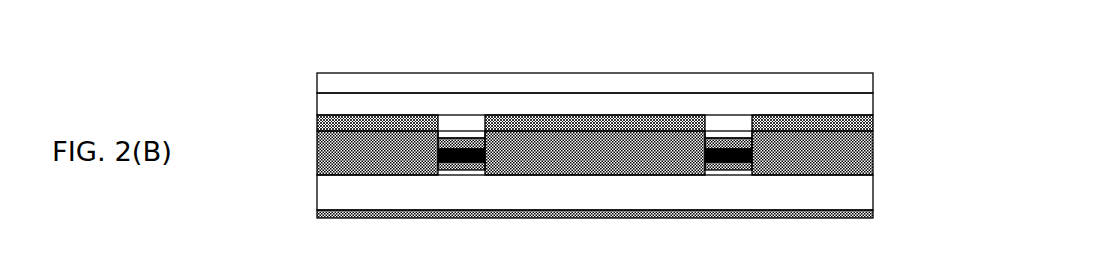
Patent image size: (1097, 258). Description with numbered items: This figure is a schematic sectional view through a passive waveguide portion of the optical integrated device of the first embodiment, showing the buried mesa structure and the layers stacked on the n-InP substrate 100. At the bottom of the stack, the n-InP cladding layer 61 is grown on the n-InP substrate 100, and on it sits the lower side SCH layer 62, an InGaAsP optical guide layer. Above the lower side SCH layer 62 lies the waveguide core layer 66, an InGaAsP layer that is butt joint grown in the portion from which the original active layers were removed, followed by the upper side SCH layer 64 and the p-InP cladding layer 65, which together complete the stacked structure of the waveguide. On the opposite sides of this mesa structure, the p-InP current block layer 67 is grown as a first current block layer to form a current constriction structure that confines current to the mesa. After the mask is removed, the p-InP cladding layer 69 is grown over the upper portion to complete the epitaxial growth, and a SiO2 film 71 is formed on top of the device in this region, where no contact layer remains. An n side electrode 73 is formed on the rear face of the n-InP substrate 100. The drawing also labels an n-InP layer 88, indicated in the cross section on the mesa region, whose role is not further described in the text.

The n-InP cladding layer 61 is at (462, 177).
The lower side SCH layer 62 is at (438, 160).
The upper side SCH layer 64 is at (902, 132).
The p-InP cladding layer 65 is at (462, 130).
The waveguide core layer 66 is at (487, 132).
The p-InP current block layer 67 is at (797, 128).
The p-InP cladding layer 69 is at (843, 100).
The SiO2 film 71 is at (355, 83).
The n side electrode 73 is at (330, 213).
The n-InP layer 88 is at (493, 133).
The n-InP substrate 100 is at (850, 193).